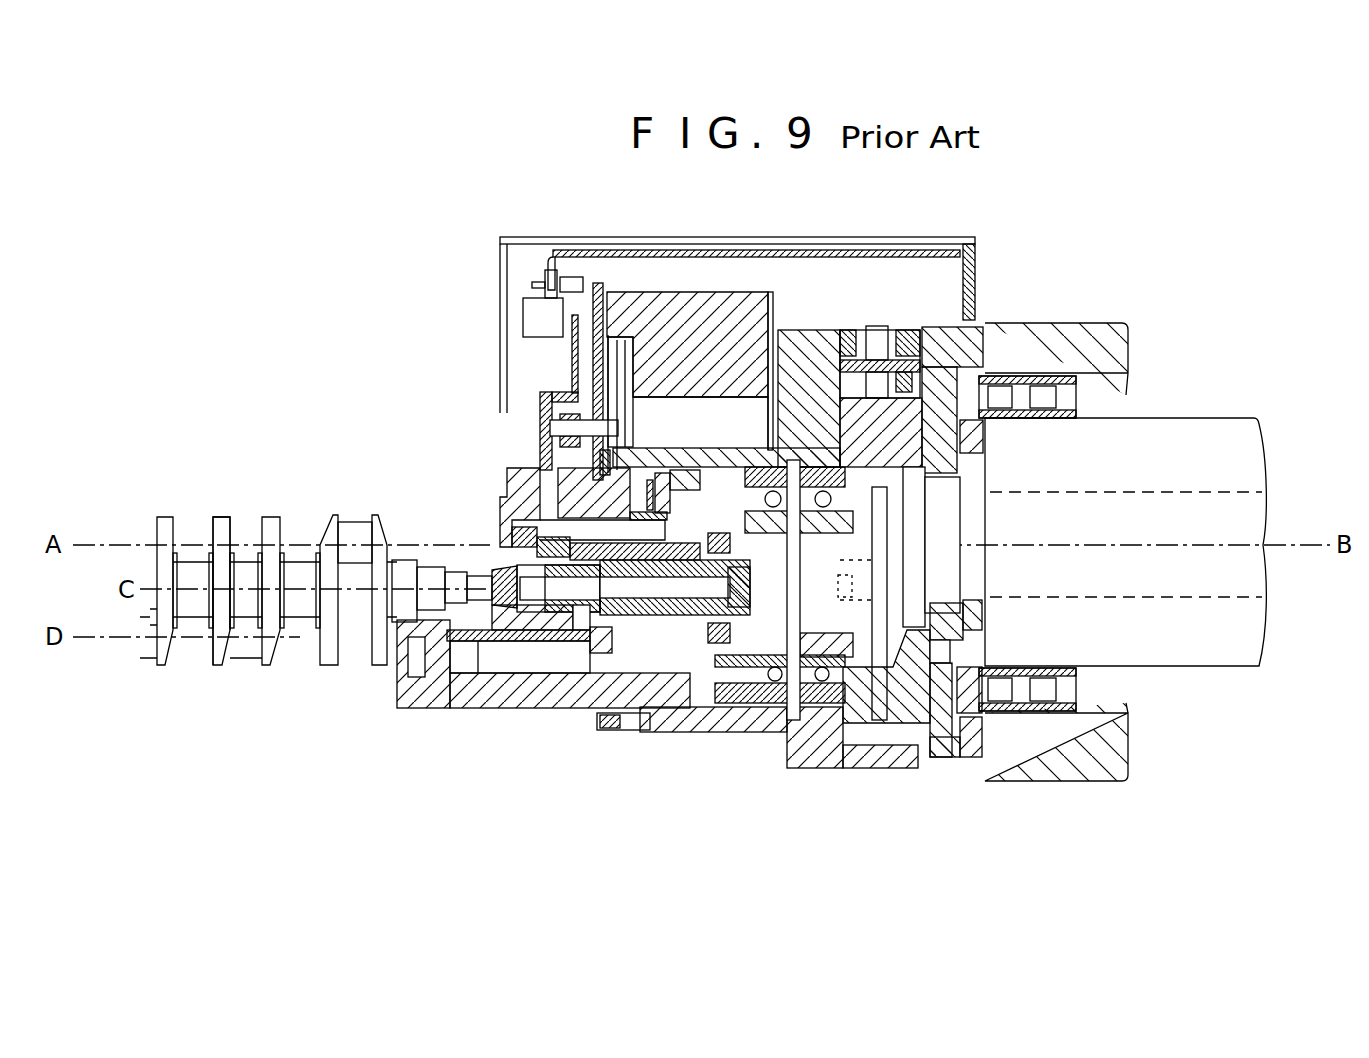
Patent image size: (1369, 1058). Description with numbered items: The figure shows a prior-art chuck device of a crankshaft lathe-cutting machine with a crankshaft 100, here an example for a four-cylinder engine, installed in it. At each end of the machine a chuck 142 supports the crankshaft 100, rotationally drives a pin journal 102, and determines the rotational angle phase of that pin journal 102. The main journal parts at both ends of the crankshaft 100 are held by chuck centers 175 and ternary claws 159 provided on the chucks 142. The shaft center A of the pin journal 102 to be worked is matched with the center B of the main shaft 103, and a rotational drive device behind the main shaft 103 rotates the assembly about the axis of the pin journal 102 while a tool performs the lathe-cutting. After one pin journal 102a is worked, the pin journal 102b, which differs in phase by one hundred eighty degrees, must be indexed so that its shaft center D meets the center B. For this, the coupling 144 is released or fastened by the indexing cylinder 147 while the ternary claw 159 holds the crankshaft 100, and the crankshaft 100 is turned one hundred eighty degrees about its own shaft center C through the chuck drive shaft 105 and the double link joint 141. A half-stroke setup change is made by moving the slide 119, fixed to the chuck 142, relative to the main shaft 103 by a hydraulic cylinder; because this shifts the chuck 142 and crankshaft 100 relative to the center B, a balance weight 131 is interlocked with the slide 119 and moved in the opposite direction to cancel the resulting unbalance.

The crankshaft 100 is at (219, 686).
The pin journal 102 is at (375, 440).
The pin journal 102a is at (352, 530).
The pin journal 102b is at (247, 625).
The main shaft 103 is at (1190, 441).
The chuck drive shaft 105 is at (1235, 575).
The slide 119 is at (822, 350).
The balance weight 131 is at (738, 291).
The double link joint 141 is at (910, 630).
The chuck 142 is at (540, 708).
The coupling 144 is at (667, 707).
The indexing cylinder 147 is at (718, 467).
The ternary claw 159 is at (403, 712).
The chuck center 175 is at (528, 590).